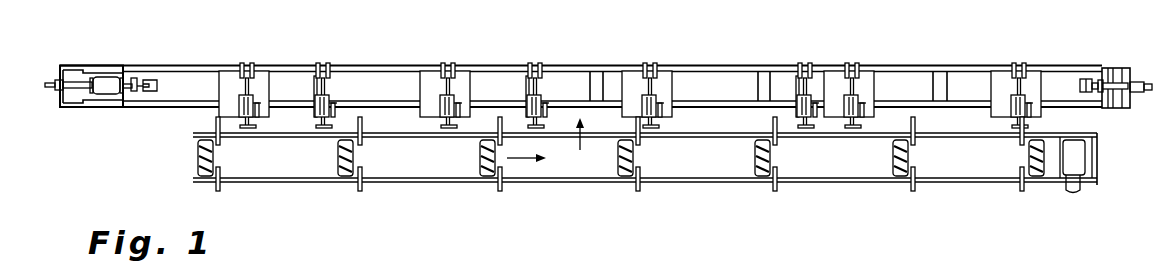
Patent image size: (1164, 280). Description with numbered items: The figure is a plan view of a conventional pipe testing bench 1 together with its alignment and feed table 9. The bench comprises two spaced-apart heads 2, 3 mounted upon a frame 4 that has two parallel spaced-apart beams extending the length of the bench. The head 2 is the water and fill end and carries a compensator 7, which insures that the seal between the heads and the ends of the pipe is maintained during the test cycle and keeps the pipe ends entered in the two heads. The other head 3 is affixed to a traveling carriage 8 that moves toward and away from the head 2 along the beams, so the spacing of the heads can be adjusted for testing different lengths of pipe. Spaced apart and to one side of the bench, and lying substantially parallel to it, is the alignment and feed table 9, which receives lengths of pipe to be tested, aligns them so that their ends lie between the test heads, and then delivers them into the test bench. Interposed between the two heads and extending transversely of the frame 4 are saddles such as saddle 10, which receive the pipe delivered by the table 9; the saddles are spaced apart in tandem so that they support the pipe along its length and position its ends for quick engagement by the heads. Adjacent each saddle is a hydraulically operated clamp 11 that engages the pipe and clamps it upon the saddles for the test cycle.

The pipe testing bench 1 is at (598, 79).
The head 2 is at (1102, 78).
The head 3 is at (108, 90).
The frame 4 is at (388, 67).
The compensator 7 is at (1143, 77).
The traveling carriage 8 is at (74, 64).
The alignment and feed table 9 is at (724, 186).
The saddle 10 is at (652, 87).
The hydraulically operated clamp 11 is at (537, 88).